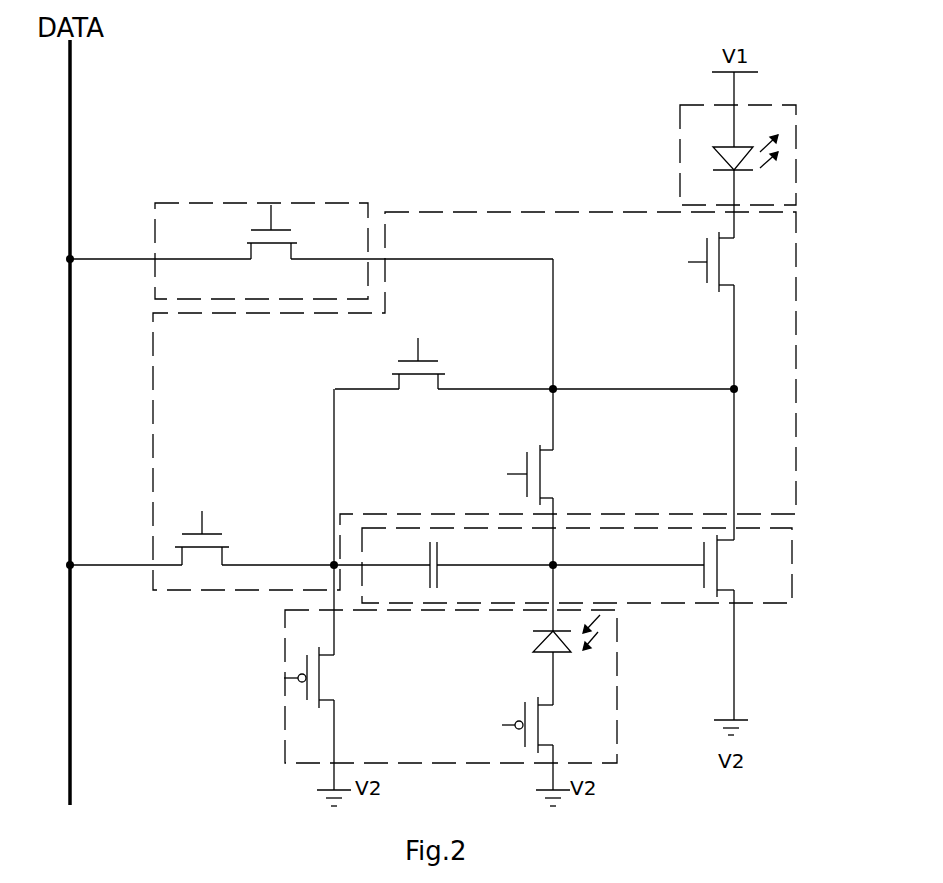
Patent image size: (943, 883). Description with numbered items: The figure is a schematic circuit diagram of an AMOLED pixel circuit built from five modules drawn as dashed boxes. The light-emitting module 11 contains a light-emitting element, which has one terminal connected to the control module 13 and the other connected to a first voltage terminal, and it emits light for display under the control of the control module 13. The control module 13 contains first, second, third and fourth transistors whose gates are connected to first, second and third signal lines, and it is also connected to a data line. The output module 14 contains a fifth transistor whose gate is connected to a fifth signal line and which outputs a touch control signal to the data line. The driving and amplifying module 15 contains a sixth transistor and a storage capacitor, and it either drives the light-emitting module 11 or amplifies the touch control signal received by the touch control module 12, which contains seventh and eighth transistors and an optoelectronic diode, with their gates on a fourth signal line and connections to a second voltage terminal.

The light-emitting module 11 is at (690, 178).
The touch control module 12 is at (295, 740).
The control module 13 is at (585, 233).
The output module 14 is at (193, 213).
The driving and amplifying module 15 is at (747, 533).